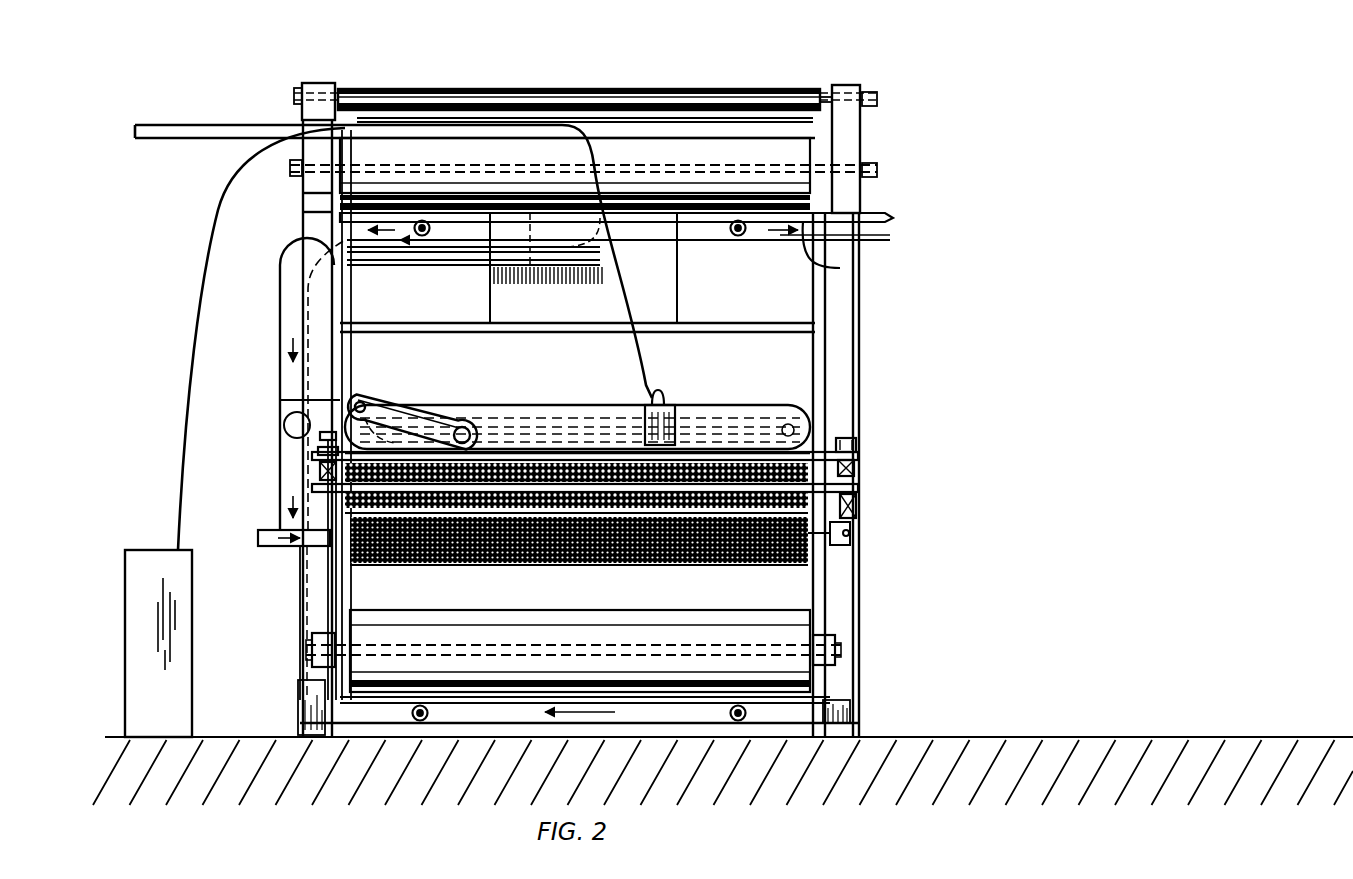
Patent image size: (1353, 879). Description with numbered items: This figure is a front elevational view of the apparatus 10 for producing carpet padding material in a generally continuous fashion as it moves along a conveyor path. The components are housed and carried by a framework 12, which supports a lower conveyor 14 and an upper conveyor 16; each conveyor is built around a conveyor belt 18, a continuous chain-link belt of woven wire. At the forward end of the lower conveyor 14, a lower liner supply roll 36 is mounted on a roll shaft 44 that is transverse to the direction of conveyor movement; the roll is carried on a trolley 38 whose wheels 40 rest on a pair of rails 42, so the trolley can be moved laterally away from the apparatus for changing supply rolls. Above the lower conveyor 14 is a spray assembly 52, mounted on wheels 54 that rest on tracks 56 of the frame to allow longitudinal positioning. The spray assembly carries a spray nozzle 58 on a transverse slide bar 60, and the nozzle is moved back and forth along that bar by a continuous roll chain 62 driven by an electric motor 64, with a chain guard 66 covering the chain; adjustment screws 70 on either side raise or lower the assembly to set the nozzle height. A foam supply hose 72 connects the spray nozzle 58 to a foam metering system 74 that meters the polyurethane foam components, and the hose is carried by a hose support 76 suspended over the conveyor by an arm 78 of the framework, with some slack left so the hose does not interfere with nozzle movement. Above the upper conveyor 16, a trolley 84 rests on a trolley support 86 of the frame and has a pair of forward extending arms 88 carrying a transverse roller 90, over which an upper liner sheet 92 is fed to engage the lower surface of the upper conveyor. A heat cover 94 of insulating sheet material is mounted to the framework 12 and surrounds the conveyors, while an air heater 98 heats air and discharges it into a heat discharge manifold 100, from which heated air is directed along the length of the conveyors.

The apparatus 10 is at (893, 60).
The framework 12 is at (848, 306).
The lower conveyor 14 is at (524, 570).
The upper conveyor 16 is at (795, 450).
The conveyor belt 18 is at (680, 648).
The lower liner supply roll 36 is at (775, 636).
The trolley 38 is at (823, 700).
The wheels 40 is at (410, 718).
The rails 42 is at (913, 725).
The roll shaft 44 is at (678, 565).
The spray assembly 52 is at (287, 400).
The wheels 54 is at (852, 511).
The tracks 56 is at (848, 533).
The spray nozzle 58 is at (713, 467).
The transverse slide bar 60 is at (723, 410).
The roll chain 62 is at (523, 410).
The electric motor 64 is at (370, 413).
The chain guard 66 is at (687, 403).
The adjustment screws 70 is at (857, 450).
The foam supply hose 72 is at (641, 280).
The foam metering system 74 is at (142, 597).
The hose support 76 is at (672, 128).
The arm 78 is at (297, 237).
The trolley 84 is at (890, 220).
The trolley support 86 is at (838, 268).
The arms 88 is at (848, 130).
The transverse roller 90 is at (553, 100).
The upper liner sheet 92 is at (747, 150).
The heat cover 94 is at (723, 328).
The air heater 98 is at (522, 288).
The heat discharge manifold 100 is at (280, 470).